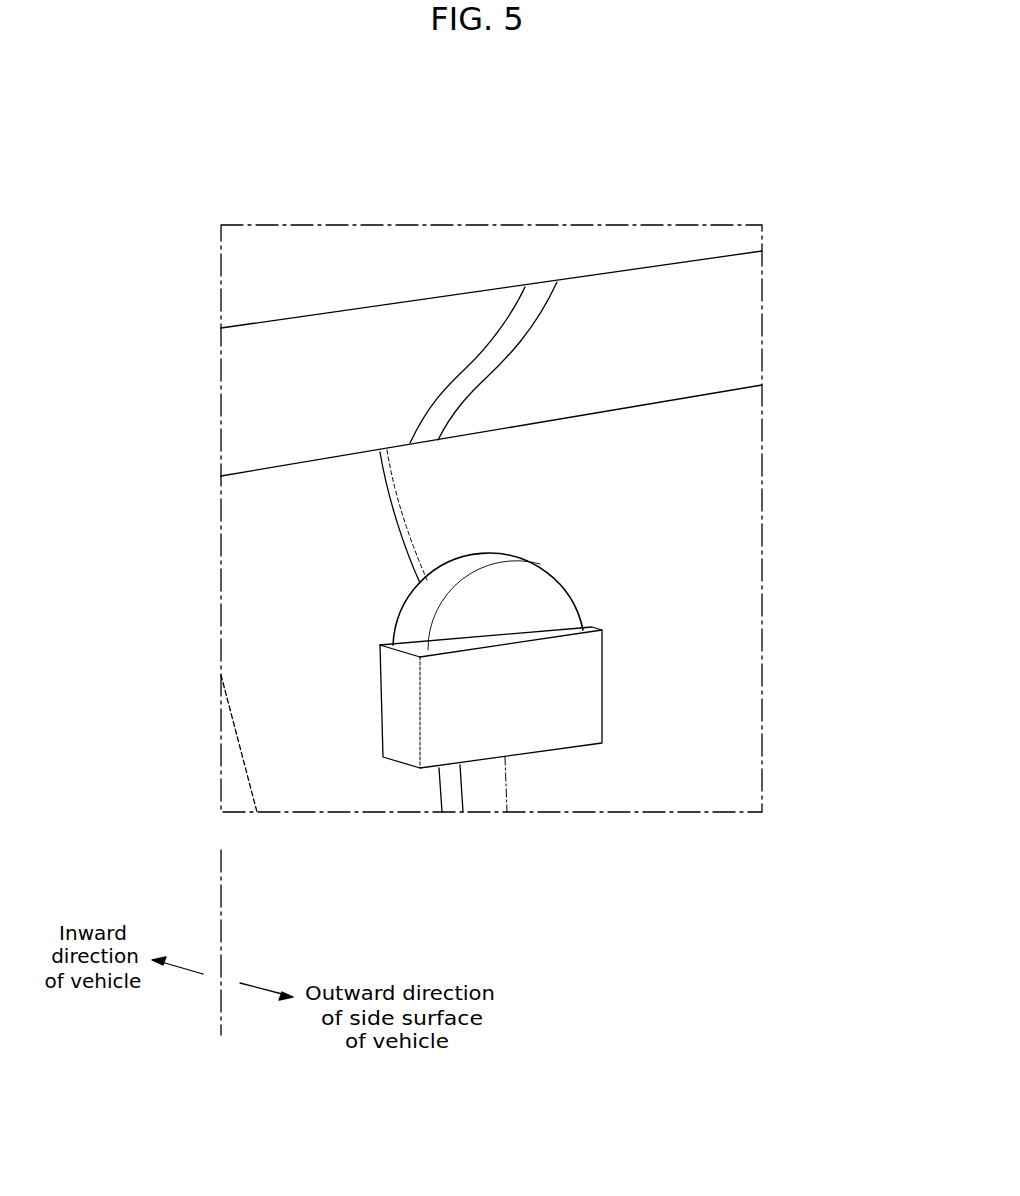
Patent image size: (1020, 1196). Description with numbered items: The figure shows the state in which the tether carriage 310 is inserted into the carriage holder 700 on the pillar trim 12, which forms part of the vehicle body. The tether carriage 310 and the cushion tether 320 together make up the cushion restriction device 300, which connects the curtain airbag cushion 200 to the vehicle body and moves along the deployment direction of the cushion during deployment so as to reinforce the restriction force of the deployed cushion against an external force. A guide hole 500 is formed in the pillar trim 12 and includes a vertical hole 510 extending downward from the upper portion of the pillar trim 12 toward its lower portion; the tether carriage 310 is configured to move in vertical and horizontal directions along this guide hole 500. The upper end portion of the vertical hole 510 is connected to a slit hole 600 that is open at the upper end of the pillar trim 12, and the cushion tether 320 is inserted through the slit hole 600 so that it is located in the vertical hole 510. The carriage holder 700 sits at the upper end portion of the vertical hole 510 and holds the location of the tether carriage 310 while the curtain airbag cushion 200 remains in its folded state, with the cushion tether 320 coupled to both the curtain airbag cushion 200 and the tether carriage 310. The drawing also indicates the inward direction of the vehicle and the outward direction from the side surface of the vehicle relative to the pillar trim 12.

The curtain airbag cushion 200 is at (297, 268).
The cushion tether 320 is at (497, 352).
The tether carriage 310 is at (510, 603).
The cushion restriction device 300 is at (428, 610).
The slit hole 600 is at (403, 518).
The pillar trim 12 is at (733, 595).
The carriage holder 700 is at (558, 705).
The vertical hole 510 is at (453, 802).
The guide hole 500 is at (482, 788).